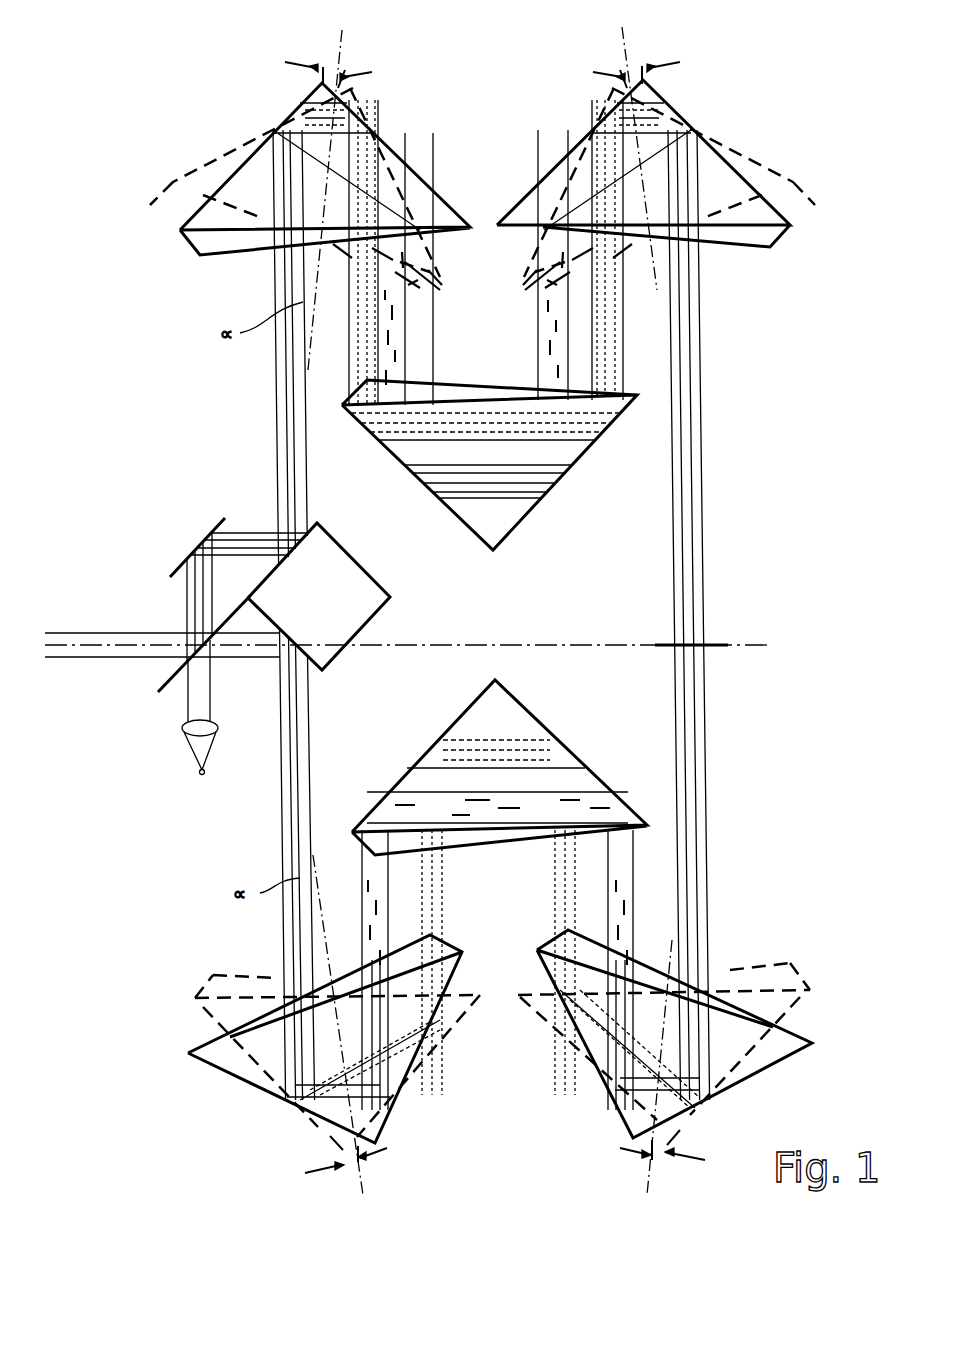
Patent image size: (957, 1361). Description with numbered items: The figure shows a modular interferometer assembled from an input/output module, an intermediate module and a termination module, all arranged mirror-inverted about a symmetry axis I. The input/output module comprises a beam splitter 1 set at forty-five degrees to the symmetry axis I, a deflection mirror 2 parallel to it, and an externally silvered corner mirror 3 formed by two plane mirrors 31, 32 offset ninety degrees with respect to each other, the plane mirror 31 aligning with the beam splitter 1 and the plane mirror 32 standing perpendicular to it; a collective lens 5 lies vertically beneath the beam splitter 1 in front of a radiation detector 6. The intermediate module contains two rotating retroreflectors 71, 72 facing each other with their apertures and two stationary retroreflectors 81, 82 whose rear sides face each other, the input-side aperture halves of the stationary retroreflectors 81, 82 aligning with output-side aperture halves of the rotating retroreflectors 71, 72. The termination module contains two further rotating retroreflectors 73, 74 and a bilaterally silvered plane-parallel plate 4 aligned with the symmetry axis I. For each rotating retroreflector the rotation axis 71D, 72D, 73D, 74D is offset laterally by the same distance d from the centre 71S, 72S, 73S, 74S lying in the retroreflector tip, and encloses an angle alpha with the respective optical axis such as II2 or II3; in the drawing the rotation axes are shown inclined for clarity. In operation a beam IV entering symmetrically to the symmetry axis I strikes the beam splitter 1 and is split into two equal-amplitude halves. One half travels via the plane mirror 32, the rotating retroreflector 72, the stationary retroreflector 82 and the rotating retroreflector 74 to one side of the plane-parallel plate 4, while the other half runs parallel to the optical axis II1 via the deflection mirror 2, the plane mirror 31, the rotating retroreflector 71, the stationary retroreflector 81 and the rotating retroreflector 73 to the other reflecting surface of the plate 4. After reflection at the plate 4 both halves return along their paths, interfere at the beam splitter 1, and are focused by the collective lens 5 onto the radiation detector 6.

The beam splitter 1 is at (152, 690).
The deflection mirror 2 is at (182, 547).
The corner mirror 3 is at (385, 605).
The plane mirror 31 is at (307, 562).
The plane mirror 32 is at (306, 627).
The plane-parallel plate 4 is at (710, 634).
The collective lens 5 is at (185, 738).
The radiation detector 6 is at (200, 775).
The rotating retroreflector 71 is at (178, 196).
The centre 71S is at (352, 84).
The rotation axis 71D is at (342, 44).
The rotating retroreflector 72 is at (200, 1028).
The centre 72S is at (380, 1142).
The rotation axis 72D is at (367, 1193).
The rotating retroreflector 73 is at (778, 176).
The centre 73S is at (648, 80).
The rotation axis 73D is at (628, 35).
The rotating retroreflector 74 is at (805, 1022).
The centre 74S is at (677, 1133).
The rotation axis 74D is at (653, 1192).
The stationary retroreflector 81 is at (497, 522).
The stationary retroreflector 82 is at (498, 698).
The symmetry axis I is at (421, 635).
The entering beam IV is at (108, 630).
The optical axis II1 is at (282, 832).
The optical axis II2 is at (420, 333).
The optical axis II3 is at (688, 385).